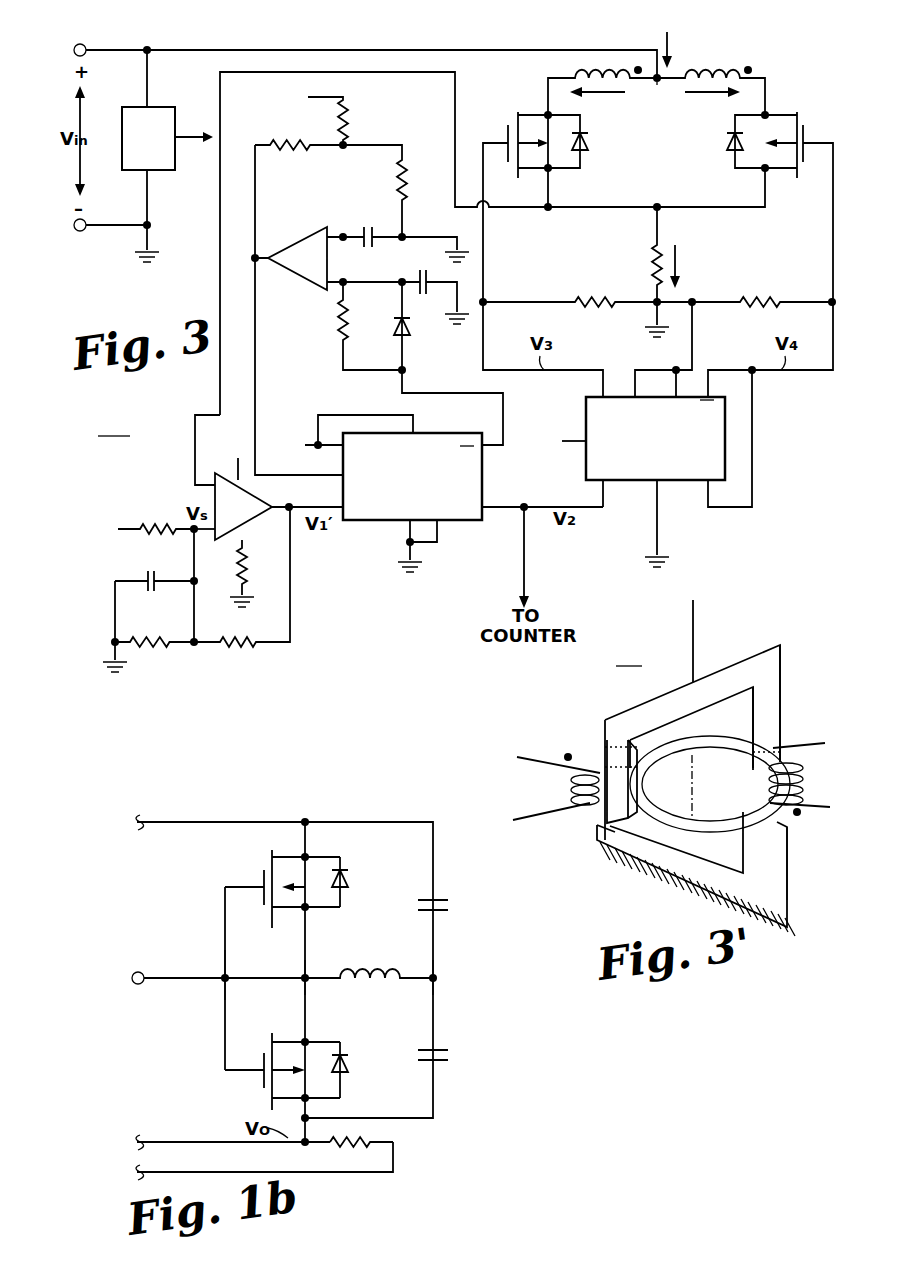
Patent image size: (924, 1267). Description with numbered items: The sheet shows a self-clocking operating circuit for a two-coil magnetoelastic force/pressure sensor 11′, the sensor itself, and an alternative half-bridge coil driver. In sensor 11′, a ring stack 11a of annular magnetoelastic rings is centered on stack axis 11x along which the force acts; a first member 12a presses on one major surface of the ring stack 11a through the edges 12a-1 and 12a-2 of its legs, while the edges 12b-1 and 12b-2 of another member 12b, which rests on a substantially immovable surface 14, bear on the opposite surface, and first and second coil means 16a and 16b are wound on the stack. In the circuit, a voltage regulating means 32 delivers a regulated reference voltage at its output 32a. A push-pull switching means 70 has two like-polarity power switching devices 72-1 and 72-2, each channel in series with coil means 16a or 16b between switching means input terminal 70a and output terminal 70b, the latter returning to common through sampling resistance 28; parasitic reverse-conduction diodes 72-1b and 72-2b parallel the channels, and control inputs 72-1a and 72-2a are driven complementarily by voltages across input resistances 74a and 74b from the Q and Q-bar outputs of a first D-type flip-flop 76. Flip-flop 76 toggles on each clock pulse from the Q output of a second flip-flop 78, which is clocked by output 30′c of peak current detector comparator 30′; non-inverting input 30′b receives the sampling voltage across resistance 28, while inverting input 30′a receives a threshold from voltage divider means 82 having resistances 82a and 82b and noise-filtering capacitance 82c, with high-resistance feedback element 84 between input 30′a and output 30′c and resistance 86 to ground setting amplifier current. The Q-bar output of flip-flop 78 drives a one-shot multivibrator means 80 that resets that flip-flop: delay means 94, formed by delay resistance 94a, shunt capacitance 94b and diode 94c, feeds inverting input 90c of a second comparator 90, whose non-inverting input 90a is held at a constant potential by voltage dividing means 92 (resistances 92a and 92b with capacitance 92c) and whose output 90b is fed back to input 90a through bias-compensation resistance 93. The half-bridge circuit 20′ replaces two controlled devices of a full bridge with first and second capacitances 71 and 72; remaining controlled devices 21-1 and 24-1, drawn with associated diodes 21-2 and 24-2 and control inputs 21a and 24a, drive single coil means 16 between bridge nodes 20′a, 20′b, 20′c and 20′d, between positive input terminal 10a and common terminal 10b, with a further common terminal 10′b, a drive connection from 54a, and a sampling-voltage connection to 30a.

In FIG. 3, the voltage regulating means 32 is at (123, 107).
In FIG. 3, the regulator output 32a is at (186, 149).
In FIG. 3, the input bias compensation feedback resistance element 93 is at (284, 145).
In FIG. 3, the second voltage dividing means 92 is at (368, 171).
In FIG. 3, the first resistance 92a is at (346, 113).
In FIG. 3, the second resistance 92b is at (404, 192).
In FIG. 3, the noise-filtering capacitance 92c is at (370, 226).
In FIG. 3, the second comparator means 90 is at (329, 238).
In FIG. 3, the non-inverting input 90a is at (340, 231).
In FIG. 3, the comparator output 90b is at (254, 263).
In FIG. 3, the inverting input 90c is at (344, 282).
In FIG. 3, the one-shot multivibrator means 80 is at (302, 303).
In FIG. 3, the delay means 94 is at (377, 340).
In FIG. 3, the delay resistance 94a is at (335, 328).
In FIG. 3, the shunt capacitance 94b is at (432, 304).
In FIG. 3, the unidirectionally-conducting element 94c is at (393, 329).
In FIG. 3, the second D-type flip-flop logic element 78 is at (374, 520).
In FIG. 3, the peak current detector comparator 30′ is at (258, 514).
In FIG. 3, the comparator inverting input 30′a is at (199, 532).
In FIG. 3, the comparator non-inverting input 30′b is at (193, 484).
In FIG. 3, the comparator output 30′c is at (287, 504).
In FIG. 3, the voltage divider means 82 is at (130, 577).
In FIG. 3, the first resistance 82a is at (148, 525).
In FIG. 3, the second resistance 82b is at (156, 642).
In FIG. 3, the noise-filtering capacitance 82c is at (155, 592).
In FIG. 3, the feedback element 84 is at (242, 642).
In FIG. 3, the additional resistance element 86 is at (246, 560).
In FIG. 3, the push-pull switching means 70 is at (650, 211).
In FIG. 3, the switching means input terminal 70a is at (657, 85).
In FIG. 3, the switching means output terminal 70b is at (626, 207).
In FIG. 3, the first coil means 16a is at (592, 68).
In FIG. 3', the first coil means 16a is at (560, 783).
In FIG. 3, the second coil means 16b is at (710, 68).
In FIG. 3', the second coil means 16b is at (810, 766).
In FIG. 3, the first power switching device 72-1 is at (552, 240).
In FIG. 3, the control input 72-1a is at (485, 188).
In FIG. 3, the parasitic reverse-conduction diode 72-1b is at (585, 142).
In FIG. 3, the second power switching device 72-2 is at (764, 225).
In FIG. 3, the control input 72-2a is at (824, 133).
In FIG. 3, the parasitic reverse-conduction diode 72-2b is at (730, 142).
In FIG. 3, the sampling resistance 28 is at (652, 268).
In FIG. 1B, the sampling resistance 28 is at (378, 1138).
In FIG. 3, the input resistance 74a is at (594, 297).
In FIG. 3, the input resistance 74b is at (770, 297).
In FIG. 3, the first D-type flip-flop logic element 76 is at (647, 488).
In FIG. 1B, the input terminal 10a is at (188, 821).
In FIG. 1B, the negative-polarity/circuit common potential terminal 10b is at (370, 1172).
In FIG. 1B, the ground line 10′b is at (142, 1178).
In FIG. 1B, the half-bridge circuit 20′ is at (208, 1065).
In FIG. 1B, the bridge node 20′a is at (316, 973).
In FIG. 1B, the bridge node 20′b is at (432, 973).
In FIG. 1B, the bridge node 20′c is at (346, 821).
In FIG. 1B, the bridge node 20′d is at (378, 1115).
In FIG. 1B, the controlled device 21-1 is at (286, 855).
In FIG. 1B, the upper diode 21-2 is at (345, 880).
In FIG. 1B, the upper transistor gate 21a is at (226, 884).
In FIG. 1B, the controlled device 24-1 is at (294, 1042).
In FIG. 1B, the lower diode 24-2 is at (344, 1058).
In FIG. 1B, the lower transistor gate 24a is at (228, 1070).
In FIG. 1B, the first capacitance 71 is at (444, 896).
In FIG. 1B, the second capacitance 72 is at (438, 1050).
In FIG. 1B, the coil means 16 is at (368, 986).
In FIG. 1B, the drive input 54a is at (130, 982).
In FIG. 1B, the comparator input connection 30a is at (127, 1141).
In FIG. 3', the magnetoelastic axial force/pressure sensor 11′ is at (657, 630).
In FIG. 3', the ring stack 11a is at (726, 750).
In FIG. 3', the stack axis 11x is at (692, 791).
In FIG. 3', the first member 12a is at (778, 664).
In FIG. 3', the edge 12a-1 is at (610, 850).
In FIG. 3', the edge 12a-2 is at (760, 740).
In FIG. 3', the second member 12b is at (786, 873).
In FIG. 3', the edge 12b-1 is at (602, 742).
In FIG. 3', the edge 12b-2 is at (786, 842).
In FIG. 3', the substantially immovable surface 14 is at (666, 876).